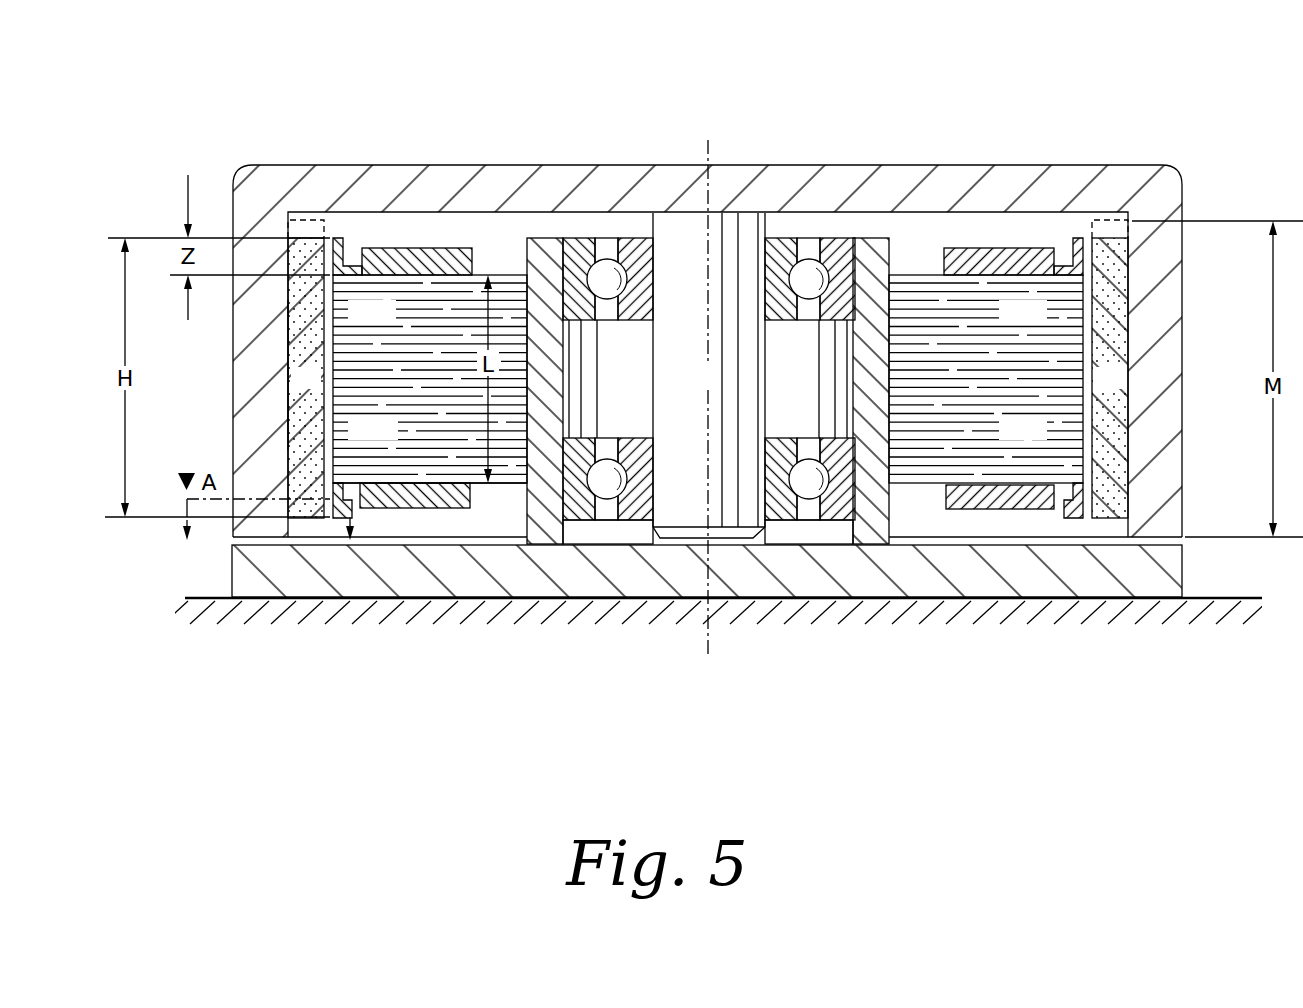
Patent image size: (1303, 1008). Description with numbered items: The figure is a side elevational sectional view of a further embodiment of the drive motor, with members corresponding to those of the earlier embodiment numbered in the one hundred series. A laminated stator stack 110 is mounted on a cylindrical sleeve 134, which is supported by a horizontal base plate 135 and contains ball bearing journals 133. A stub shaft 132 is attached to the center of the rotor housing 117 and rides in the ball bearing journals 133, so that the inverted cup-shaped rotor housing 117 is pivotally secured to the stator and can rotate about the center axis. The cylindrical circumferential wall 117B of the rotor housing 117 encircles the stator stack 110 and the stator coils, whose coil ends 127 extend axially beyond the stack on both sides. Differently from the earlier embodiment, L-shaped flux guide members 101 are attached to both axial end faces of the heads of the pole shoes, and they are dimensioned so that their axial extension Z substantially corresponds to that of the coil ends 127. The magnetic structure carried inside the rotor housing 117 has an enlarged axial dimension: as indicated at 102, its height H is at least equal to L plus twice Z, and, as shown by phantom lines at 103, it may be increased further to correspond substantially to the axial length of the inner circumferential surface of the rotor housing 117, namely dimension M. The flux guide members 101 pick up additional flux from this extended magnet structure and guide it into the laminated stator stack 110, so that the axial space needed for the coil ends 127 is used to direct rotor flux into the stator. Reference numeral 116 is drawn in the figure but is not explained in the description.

The flux guide member 101 is at (343, 240).
The axial dimension indication of magnet structure 102 is at (322, 296).
The phantom-line extension of magnetic structure 103 is at (310, 216).
The laminated stator stack 110 is at (500, 498).
The rotor yoke 116 is at (327, 442).
The rotor housing 117 is at (1066, 157).
The circumferential wall 117B is at (250, 383).
The coil ends 127 is at (427, 250).
The stub shaft 132 is at (665, 387).
The ball bearing journals 133 is at (591, 240).
The cylindrical sleeve 134 is at (541, 546).
The horizontal base plate 135 is at (283, 575).